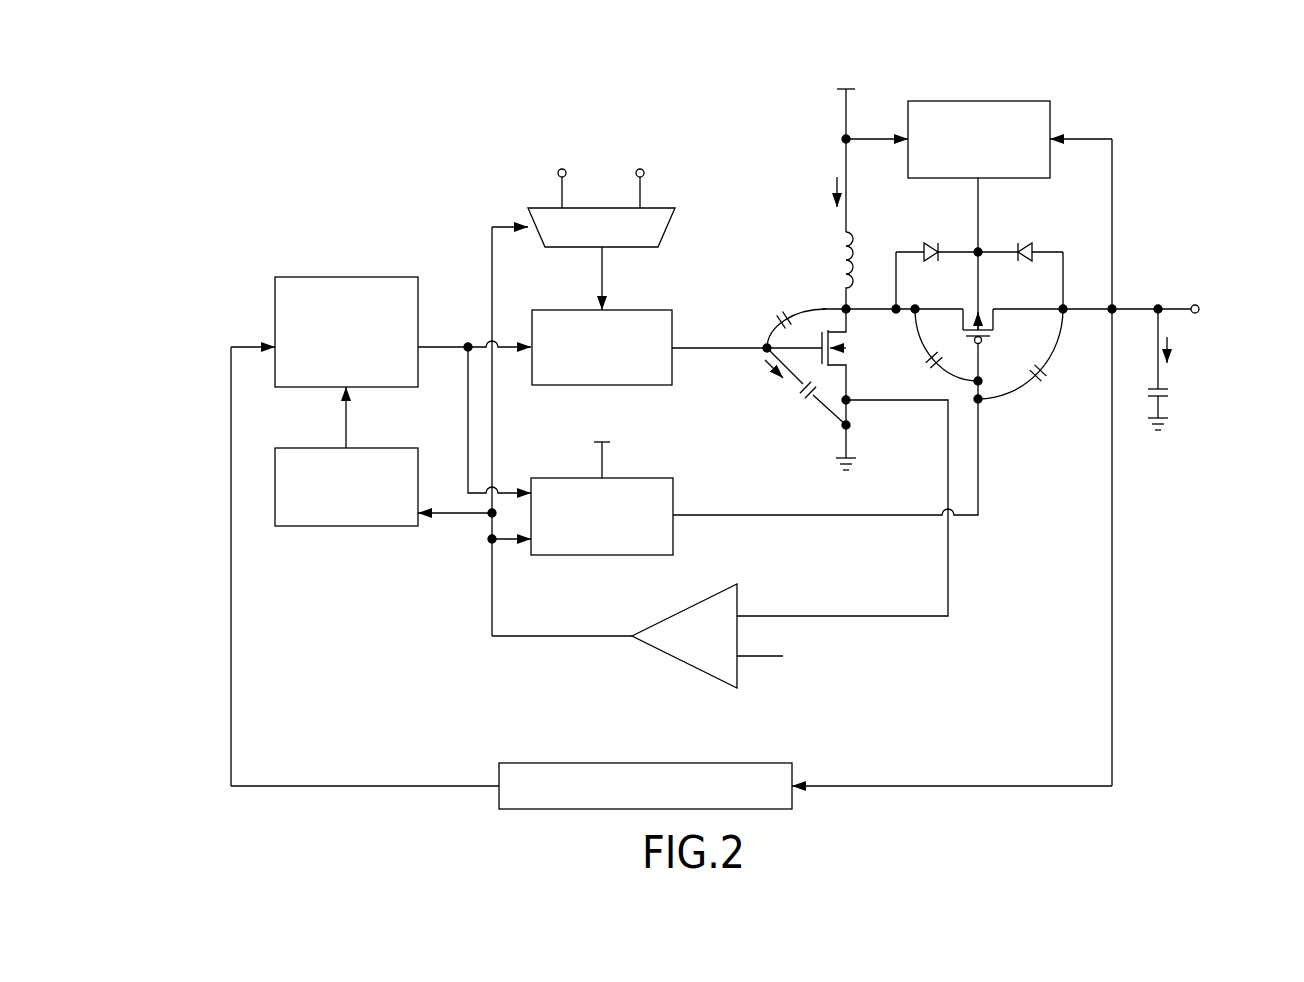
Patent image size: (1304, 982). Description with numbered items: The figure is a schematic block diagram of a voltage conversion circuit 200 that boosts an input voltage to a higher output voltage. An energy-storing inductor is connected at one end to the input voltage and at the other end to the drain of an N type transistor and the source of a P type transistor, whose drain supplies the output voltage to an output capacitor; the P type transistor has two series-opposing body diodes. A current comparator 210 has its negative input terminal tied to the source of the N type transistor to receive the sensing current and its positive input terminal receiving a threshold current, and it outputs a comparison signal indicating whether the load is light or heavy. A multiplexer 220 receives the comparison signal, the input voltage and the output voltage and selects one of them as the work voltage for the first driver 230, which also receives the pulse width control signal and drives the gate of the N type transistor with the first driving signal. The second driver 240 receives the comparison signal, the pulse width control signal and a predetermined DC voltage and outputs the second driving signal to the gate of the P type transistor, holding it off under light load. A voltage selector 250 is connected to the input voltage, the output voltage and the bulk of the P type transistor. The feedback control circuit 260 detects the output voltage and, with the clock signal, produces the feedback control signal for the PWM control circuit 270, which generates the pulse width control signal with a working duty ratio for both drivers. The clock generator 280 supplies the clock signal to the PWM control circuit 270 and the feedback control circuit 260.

The voltage conversion circuit 200 is at (253, 103).
The current comparator 210 is at (685, 663).
The multiplexer 220 is at (536, 208).
The first driver 230 is at (653, 310).
The second driver 240 is at (673, 533).
The voltage selector 250 is at (1013, 101).
The feedback control circuit 260 is at (560, 763).
The PWM control circuit 270 is at (340, 277).
The clock generator 280 is at (307, 526).